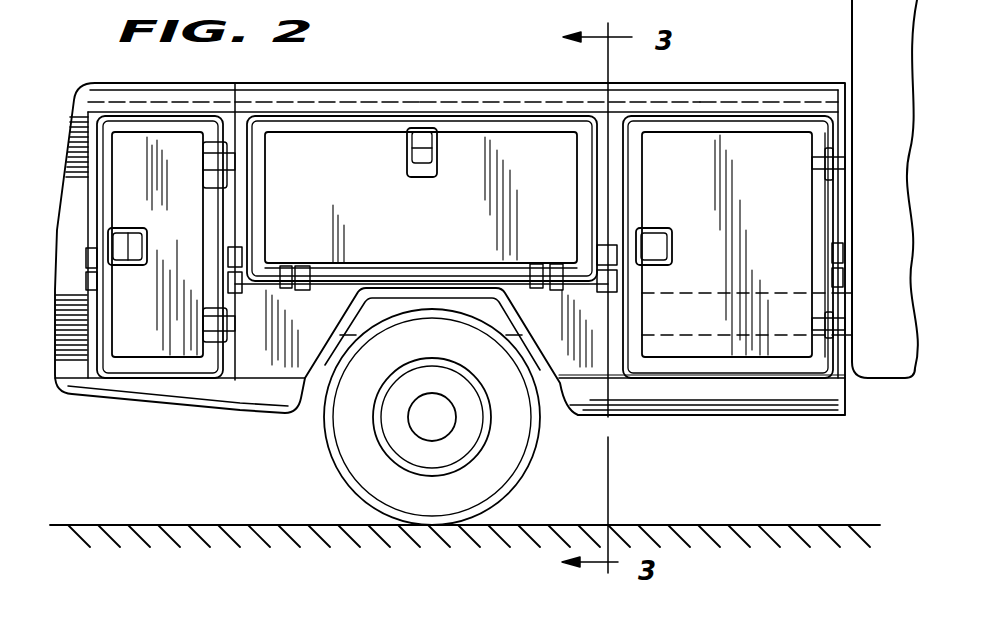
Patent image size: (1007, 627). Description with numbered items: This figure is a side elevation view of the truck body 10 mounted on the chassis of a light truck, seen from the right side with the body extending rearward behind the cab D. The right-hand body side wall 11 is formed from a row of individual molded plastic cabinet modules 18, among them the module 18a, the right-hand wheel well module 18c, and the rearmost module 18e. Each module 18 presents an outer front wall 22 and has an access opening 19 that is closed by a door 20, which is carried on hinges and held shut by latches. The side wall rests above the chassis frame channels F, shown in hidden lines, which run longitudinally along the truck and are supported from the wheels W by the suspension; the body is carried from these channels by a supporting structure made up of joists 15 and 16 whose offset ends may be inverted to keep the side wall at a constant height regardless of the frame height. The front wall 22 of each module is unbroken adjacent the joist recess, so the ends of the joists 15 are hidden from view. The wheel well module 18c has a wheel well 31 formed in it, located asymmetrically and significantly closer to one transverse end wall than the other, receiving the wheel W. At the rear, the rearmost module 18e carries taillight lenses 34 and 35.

The truck body 10 is at (742, 80).
The body side wall 11 is at (750, 398).
The joist 15 is at (243, 263).
The joist 16 is at (88, 263).
The module 18 is at (105, 82).
The module 18a is at (793, 102).
The right-hand wheel well module 18c is at (487, 104).
The rearmost module 18e is at (168, 104).
The access opening 19 is at (98, 198).
The door 20 is at (193, 212).
The front wall 22 is at (267, 362).
The wheel well 31 is at (557, 405).
The taillight lens 34 is at (62, 340).
The taillight lens 35 is at (70, 163).
The wheels W is at (368, 480).
The cab D is at (892, 131).
The frame channels F is at (703, 290).